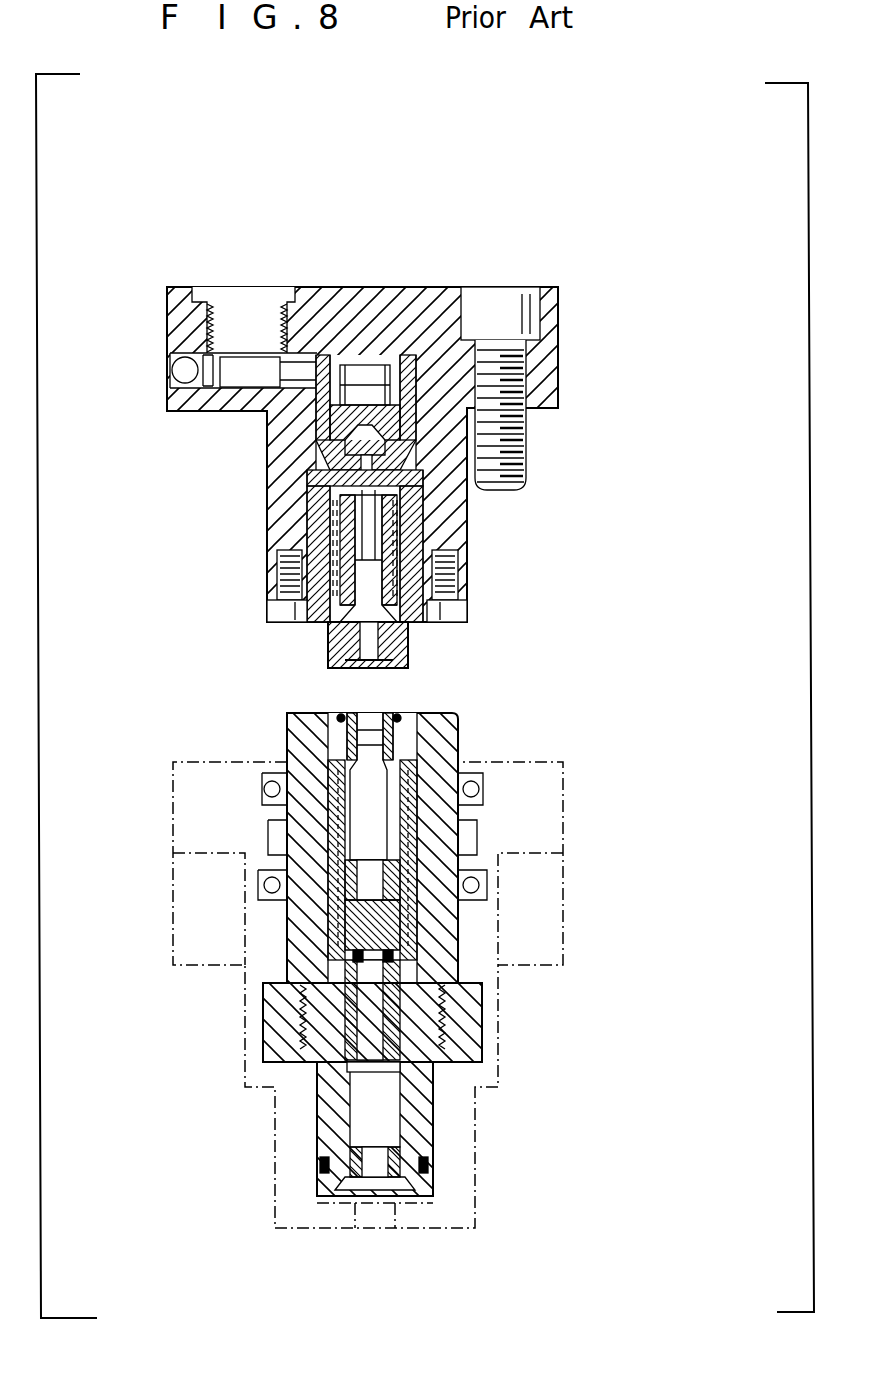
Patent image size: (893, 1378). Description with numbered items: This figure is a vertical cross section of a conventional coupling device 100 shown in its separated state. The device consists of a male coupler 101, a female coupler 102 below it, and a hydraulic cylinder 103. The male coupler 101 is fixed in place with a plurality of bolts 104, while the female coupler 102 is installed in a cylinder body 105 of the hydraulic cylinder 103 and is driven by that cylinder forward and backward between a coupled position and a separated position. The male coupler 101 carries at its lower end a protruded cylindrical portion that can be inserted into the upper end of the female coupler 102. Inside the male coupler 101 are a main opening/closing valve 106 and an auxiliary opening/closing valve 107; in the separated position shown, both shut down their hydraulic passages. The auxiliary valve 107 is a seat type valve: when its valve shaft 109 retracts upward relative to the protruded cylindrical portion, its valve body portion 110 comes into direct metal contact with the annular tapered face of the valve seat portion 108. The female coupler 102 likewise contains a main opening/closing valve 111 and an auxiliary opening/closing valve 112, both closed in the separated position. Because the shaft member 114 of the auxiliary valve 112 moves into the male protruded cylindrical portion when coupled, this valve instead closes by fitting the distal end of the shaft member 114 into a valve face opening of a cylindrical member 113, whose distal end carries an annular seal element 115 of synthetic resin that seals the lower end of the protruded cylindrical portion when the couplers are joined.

The coupling device 100 is at (450, 718).
The male coupler 101 is at (430, 491).
The female coupler 102 is at (502, 713).
The hydraulic cylinder 103 is at (257, 1198).
The bolts 104 is at (527, 462).
The cylinder body 105 is at (478, 1088).
The main opening/closing valve 106 is at (318, 458).
The auxiliary opening/closing valve 107 is at (343, 674).
The valve seat portion 108 is at (372, 668).
The valve shaft 109 is at (382, 610).
The valve body portion 110 is at (395, 660).
The main opening/closing valve 111 is at (333, 1050).
The auxiliary opening/closing valve 112 is at (398, 705).
The cylindrical member 113 is at (334, 745).
The shaft member 114 is at (382, 838).
The annular seal element 115 is at (342, 716).